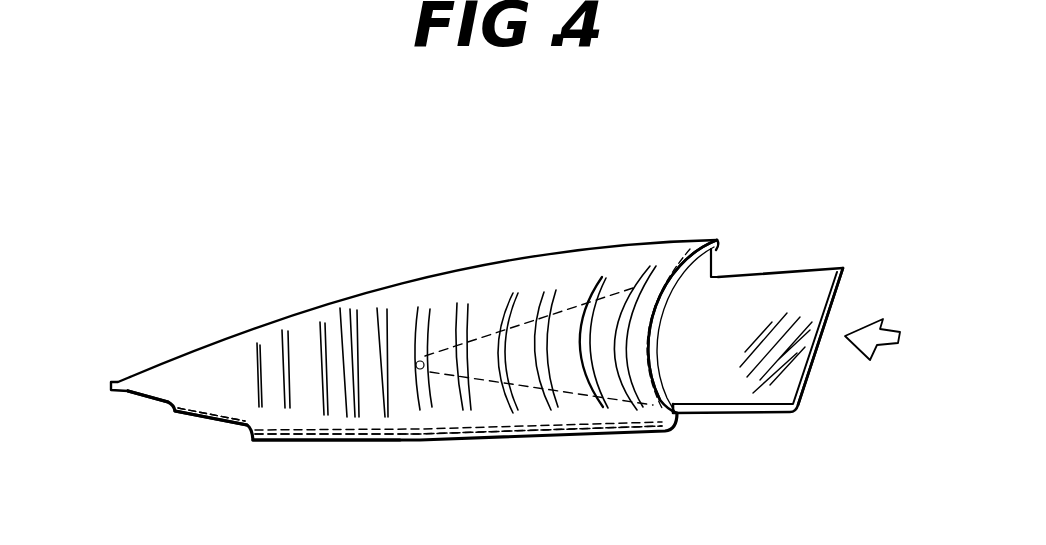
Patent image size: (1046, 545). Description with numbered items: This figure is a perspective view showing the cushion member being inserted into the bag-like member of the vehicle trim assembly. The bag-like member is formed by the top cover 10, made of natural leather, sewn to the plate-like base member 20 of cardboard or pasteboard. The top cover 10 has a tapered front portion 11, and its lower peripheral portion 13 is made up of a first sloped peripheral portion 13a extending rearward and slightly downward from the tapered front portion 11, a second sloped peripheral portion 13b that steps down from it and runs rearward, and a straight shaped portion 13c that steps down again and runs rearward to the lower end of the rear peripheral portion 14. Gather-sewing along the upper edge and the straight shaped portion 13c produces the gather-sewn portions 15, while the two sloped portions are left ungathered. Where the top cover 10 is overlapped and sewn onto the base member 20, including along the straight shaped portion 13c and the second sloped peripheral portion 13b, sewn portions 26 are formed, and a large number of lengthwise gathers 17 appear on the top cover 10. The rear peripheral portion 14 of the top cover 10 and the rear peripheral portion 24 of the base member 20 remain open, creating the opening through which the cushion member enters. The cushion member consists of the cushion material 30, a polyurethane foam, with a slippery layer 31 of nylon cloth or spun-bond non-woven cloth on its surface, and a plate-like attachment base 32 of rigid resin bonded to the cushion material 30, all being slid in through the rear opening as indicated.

The top cover 10 is at (463, 273).
The tapered front portion 11 is at (128, 377).
The lower peripheral portion 13 is at (450, 442).
The first sloped peripheral portion 13a is at (150, 400).
The second sloped peripheral portion 13b is at (227, 427).
The straight shaped portion 13c is at (293, 443).
The rear peripheral portion 14 is at (653, 330).
The gather-sewn portion 15 is at (547, 430).
The gathers 17 is at (325, 343).
The plate-like base member 20 is at (720, 250).
The rear peripheral portion 24 is at (718, 273).
The sewn portion 26 is at (207, 412).
The cushion material 30 is at (843, 270).
The slippery layer 31 is at (728, 387).
The plate-like attachment base 32 is at (783, 410).